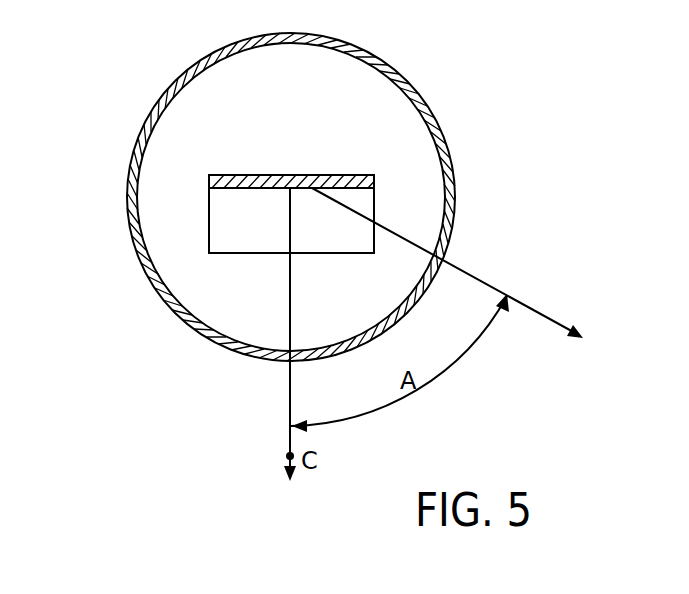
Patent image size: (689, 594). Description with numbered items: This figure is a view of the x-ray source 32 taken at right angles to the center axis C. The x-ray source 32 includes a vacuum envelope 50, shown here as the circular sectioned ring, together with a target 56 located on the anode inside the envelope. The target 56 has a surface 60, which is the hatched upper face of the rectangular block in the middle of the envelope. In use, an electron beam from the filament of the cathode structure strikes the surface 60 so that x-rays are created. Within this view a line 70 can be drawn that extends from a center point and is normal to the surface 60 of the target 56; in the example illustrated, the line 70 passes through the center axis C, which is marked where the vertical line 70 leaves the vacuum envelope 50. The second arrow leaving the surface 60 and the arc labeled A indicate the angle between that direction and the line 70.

The x-ray source 32 is at (95, 68).
The vacuum envelope 50 is at (403, 73).
The target 56 is at (374, 180).
The surface 60 is at (250, 189).
The line 70 is at (310, 334).